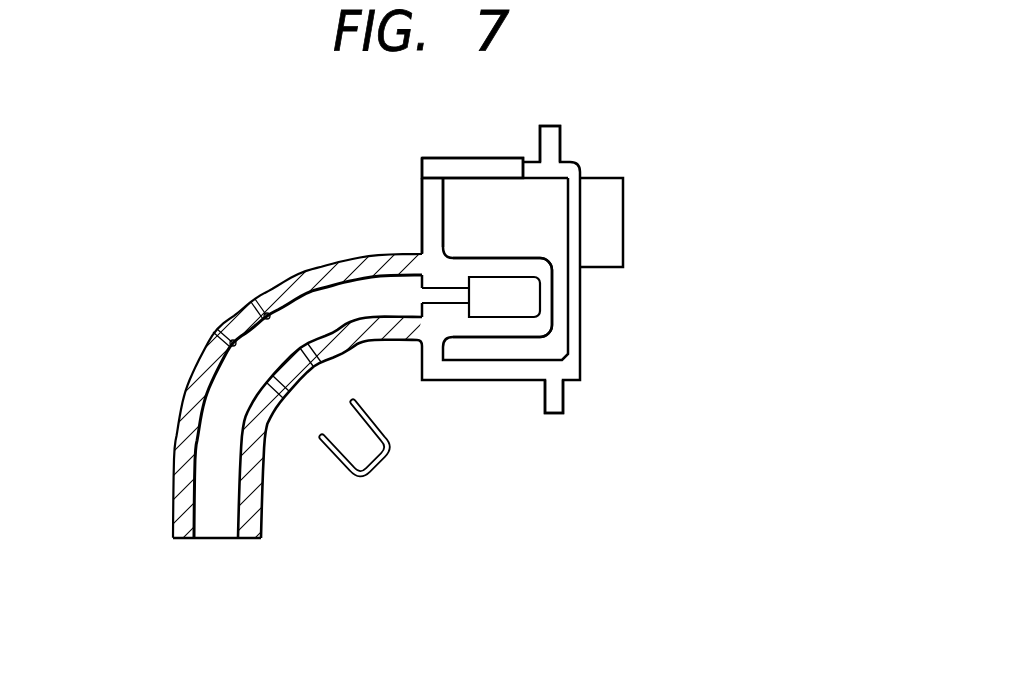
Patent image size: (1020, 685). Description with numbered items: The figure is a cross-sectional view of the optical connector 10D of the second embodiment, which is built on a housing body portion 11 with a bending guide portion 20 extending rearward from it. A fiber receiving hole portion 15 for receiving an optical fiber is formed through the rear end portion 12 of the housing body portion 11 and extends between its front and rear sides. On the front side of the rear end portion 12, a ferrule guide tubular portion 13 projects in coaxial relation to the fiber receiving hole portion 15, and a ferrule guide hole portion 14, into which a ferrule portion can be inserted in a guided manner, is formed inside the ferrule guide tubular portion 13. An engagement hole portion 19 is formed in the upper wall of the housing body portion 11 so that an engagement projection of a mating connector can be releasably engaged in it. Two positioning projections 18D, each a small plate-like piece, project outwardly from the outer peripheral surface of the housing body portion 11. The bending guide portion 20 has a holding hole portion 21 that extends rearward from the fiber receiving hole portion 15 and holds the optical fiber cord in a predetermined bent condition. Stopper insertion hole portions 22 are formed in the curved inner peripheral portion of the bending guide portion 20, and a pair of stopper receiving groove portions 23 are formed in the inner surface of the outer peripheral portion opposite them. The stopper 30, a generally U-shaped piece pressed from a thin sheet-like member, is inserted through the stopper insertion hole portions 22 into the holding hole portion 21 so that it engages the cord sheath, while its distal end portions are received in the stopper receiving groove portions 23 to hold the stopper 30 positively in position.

The optical connector 10D is at (346, 150).
The housing body portion 11 is at (514, 380).
The rear end portion 12 is at (423, 198).
The ferrule guide tubular portion 13 is at (497, 253).
The ferrule guide hole portion 14 is at (518, 278).
The fiber receiving hole portion 15 is at (460, 292).
The positioning projection 18D is at (557, 128).
The engagement hole portion 19 is at (523, 170).
The bending guide portion 20 is at (176, 462).
The holding hole portion 21 is at (195, 500).
The stopper insertion hole portion 22 is at (316, 368).
The stopper receiving groove portion 23 is at (217, 330).
The stopper 30 is at (390, 470).